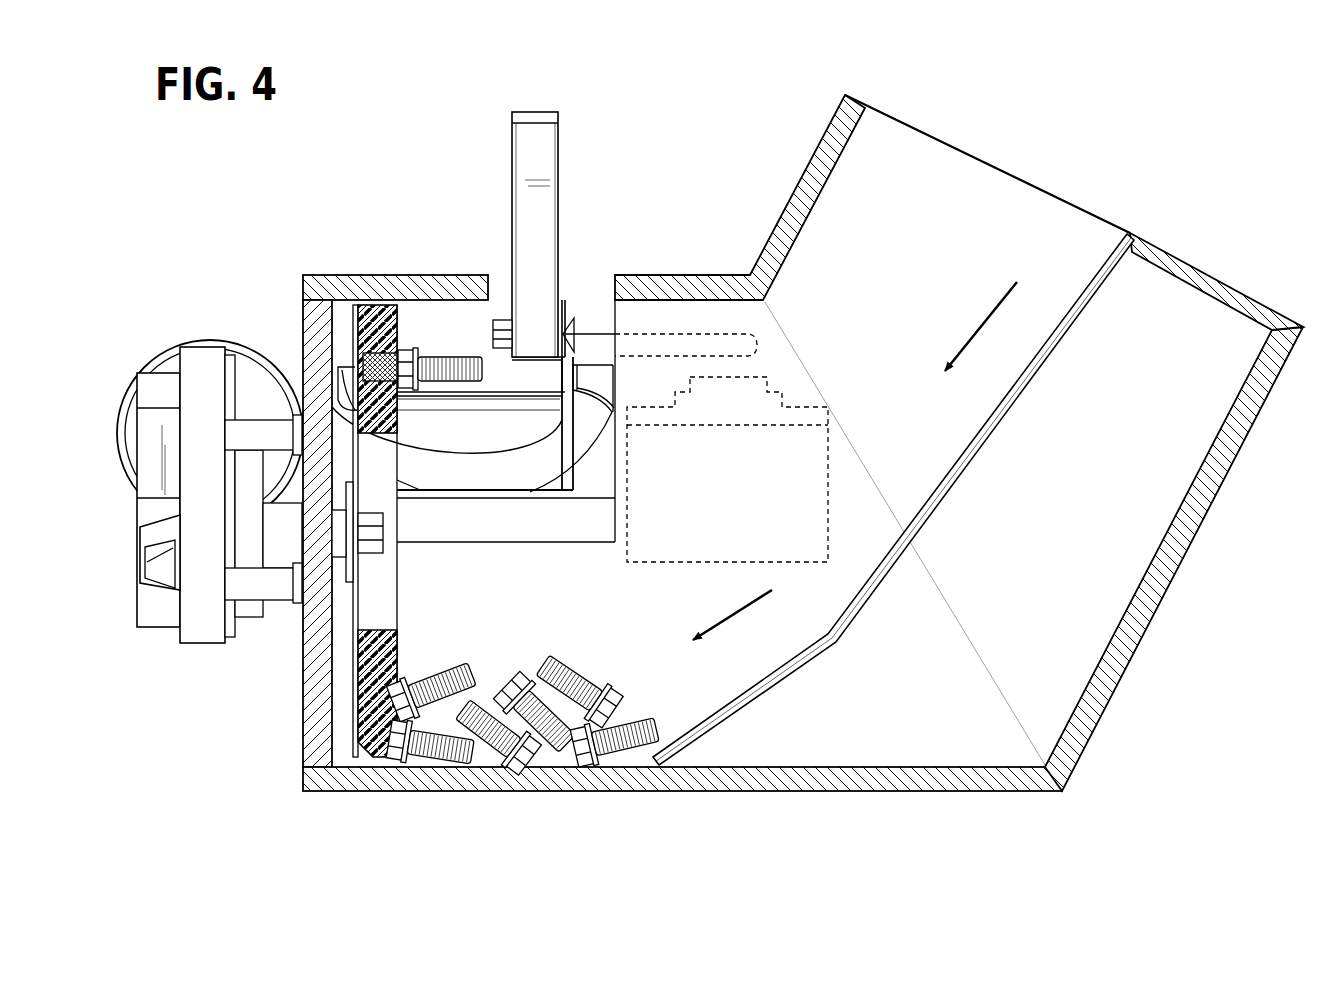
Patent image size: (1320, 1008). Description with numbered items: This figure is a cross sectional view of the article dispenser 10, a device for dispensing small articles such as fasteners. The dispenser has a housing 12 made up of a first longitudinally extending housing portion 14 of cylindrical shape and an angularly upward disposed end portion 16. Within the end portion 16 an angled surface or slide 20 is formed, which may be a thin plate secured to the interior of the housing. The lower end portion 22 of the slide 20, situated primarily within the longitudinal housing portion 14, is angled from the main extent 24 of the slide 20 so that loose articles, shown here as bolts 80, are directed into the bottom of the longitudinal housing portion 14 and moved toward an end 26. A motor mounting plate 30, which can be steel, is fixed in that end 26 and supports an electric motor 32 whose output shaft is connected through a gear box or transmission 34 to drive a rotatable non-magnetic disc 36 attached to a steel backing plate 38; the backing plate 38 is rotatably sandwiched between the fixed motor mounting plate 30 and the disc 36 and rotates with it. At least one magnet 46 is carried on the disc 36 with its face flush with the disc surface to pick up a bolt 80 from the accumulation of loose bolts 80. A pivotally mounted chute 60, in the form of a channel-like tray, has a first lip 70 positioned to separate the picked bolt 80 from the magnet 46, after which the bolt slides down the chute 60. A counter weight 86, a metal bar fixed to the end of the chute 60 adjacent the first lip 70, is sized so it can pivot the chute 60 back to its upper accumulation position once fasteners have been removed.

The article dispenser 10 is at (467, 205).
The housing 12 is at (366, 258).
The first longitudinally extending housing portion 14 is at (960, 800).
The angularly upward disposed end portion 16 is at (1195, 552).
The slide 20 is at (1097, 270).
The lower end portion 22 is at (765, 693).
The main extent 24 is at (1064, 320).
The end 26 is at (303, 779).
The motor mounting plate 30 is at (318, 678).
The electric motor 32 is at (162, 345).
The transmission 34 is at (137, 562).
The rotatable disc 36 is at (383, 740).
The backing plate 38 is at (346, 742).
The magnet 46 is at (381, 356).
The chute 60 is at (514, 384).
The first lip 70 is at (540, 393).
The bolt 80 is at (445, 362).
The counter weight 86 is at (545, 165).